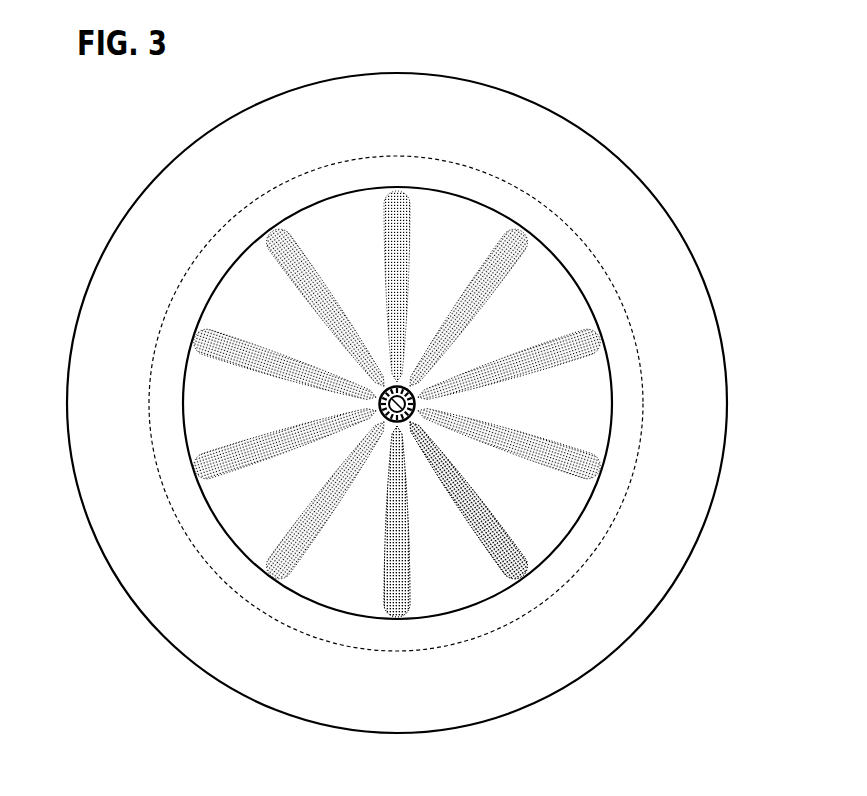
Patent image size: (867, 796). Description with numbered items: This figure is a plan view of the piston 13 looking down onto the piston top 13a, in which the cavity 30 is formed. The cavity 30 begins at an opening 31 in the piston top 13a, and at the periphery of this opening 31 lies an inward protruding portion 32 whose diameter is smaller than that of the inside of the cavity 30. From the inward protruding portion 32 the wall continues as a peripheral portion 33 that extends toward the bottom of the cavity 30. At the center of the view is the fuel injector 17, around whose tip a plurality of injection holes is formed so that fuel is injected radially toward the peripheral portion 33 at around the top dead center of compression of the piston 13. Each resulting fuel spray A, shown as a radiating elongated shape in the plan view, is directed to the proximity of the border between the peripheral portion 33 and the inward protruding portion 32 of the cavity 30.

The piston 13 is at (537, 93).
The piston top 13a is at (574, 170).
The opening 31 is at (568, 269).
The inward protruding portion 32 is at (593, 295).
The peripheral portion 33 is at (643, 358).
The cavity 30 is at (555, 405).
The fuel spray A is at (492, 513).
The fuel injector 17 is at (402, 387).